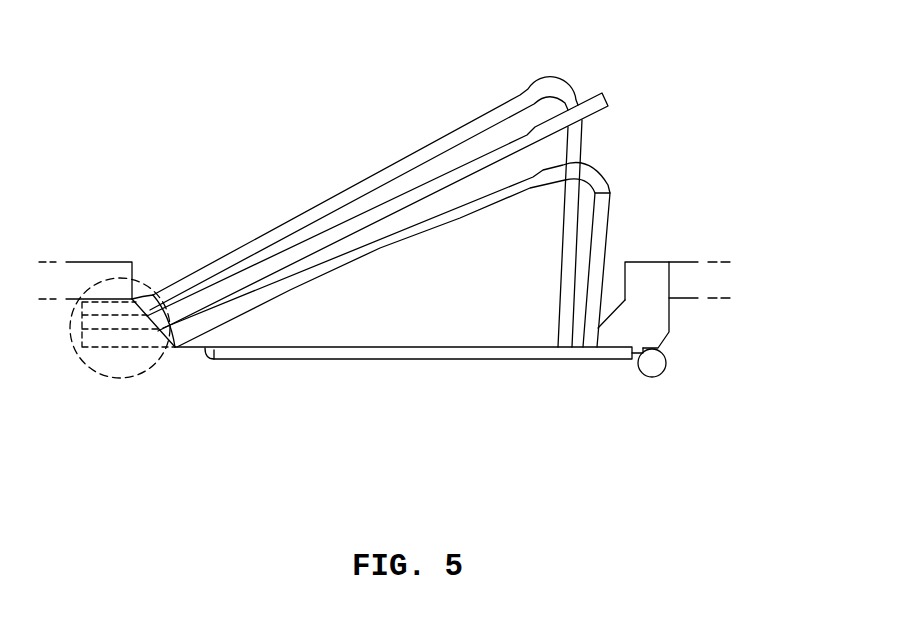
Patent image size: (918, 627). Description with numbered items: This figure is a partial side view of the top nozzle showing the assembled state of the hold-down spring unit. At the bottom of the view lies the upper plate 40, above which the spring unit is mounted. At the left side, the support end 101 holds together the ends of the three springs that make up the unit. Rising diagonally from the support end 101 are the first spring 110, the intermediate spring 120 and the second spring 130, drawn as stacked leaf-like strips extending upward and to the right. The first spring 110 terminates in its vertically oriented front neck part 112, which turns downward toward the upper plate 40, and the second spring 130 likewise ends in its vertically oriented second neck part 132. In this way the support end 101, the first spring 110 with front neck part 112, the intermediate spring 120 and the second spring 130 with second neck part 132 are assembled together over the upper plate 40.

The upper plate 40 is at (313, 350).
The support end 101 is at (152, 292).
The first spring 110 is at (563, 86).
The front neck part 112 is at (557, 265).
The intermediate spring 120 is at (607, 108).
The second spring 130 is at (610, 208).
The second neck part 132 is at (603, 299).